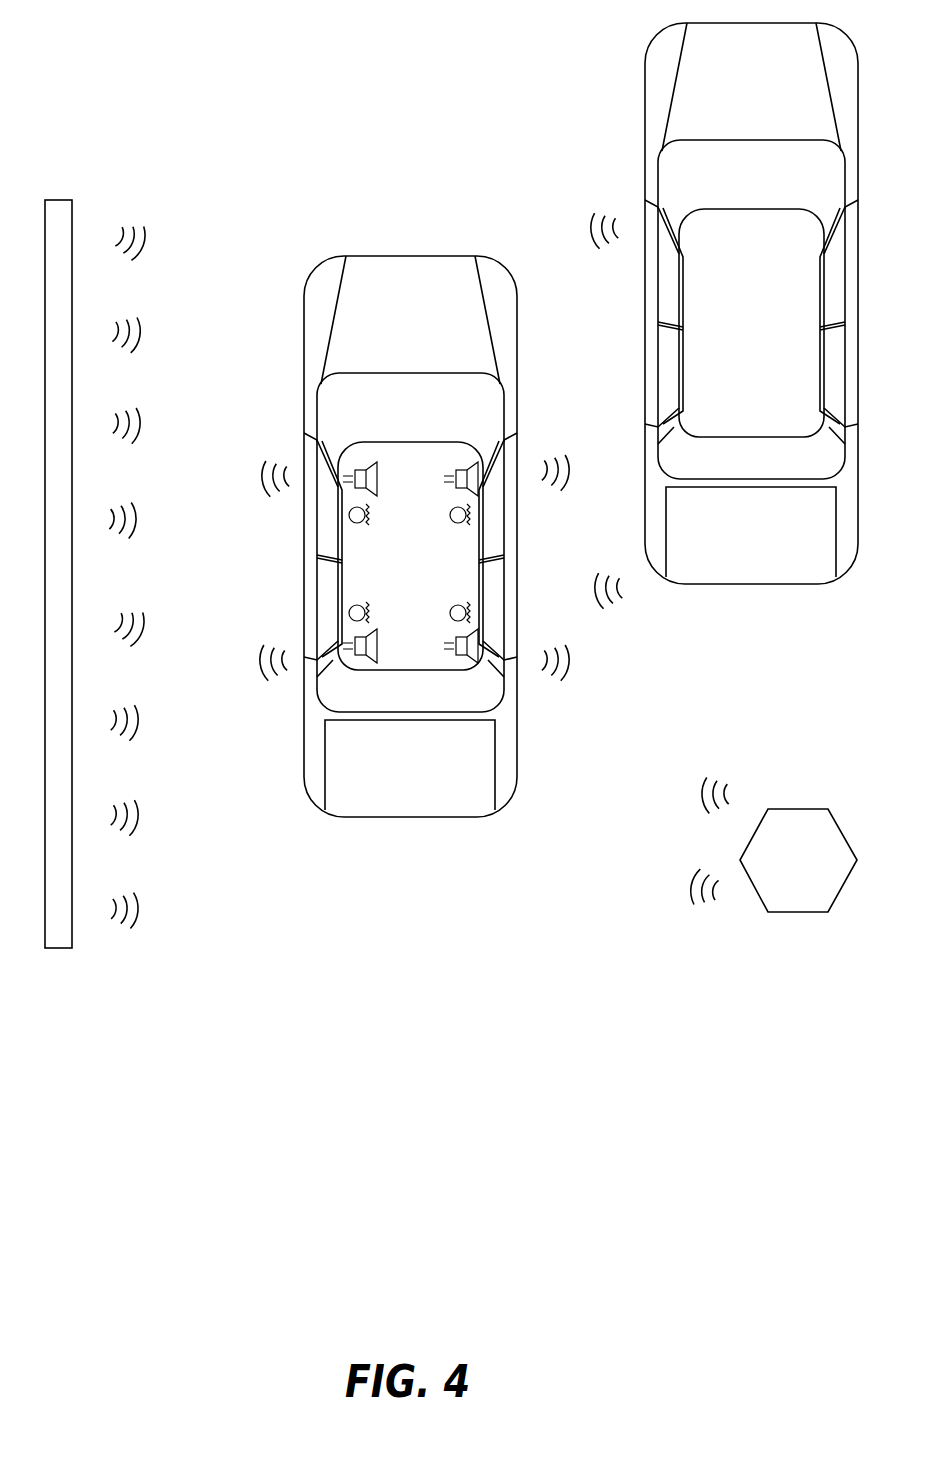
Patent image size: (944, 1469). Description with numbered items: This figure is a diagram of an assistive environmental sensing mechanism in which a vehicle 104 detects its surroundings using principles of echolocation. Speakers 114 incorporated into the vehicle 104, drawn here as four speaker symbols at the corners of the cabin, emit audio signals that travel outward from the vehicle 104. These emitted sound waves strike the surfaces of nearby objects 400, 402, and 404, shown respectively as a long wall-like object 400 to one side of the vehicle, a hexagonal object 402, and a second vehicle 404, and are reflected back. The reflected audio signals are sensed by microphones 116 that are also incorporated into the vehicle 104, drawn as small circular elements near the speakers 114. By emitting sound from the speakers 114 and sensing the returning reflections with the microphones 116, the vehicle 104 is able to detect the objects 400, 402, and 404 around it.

The nearby object 400 is at (61, 199).
The vehicle 104 is at (441, 256).
The speakers 114 is at (445, 645).
The microphones 116 is at (367, 520).
The nearby object 402 is at (796, 808).
The nearby object 404 is at (793, 585).